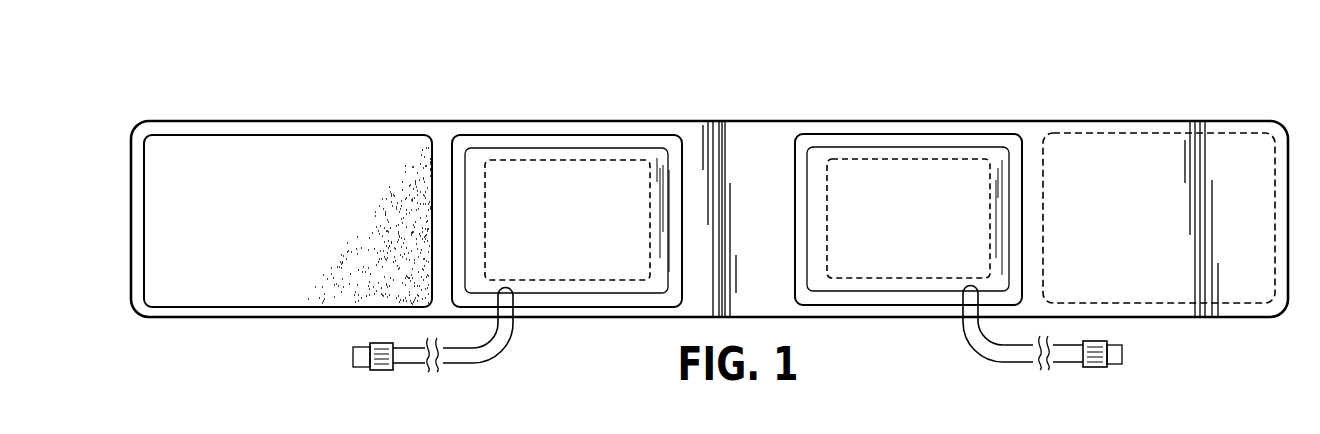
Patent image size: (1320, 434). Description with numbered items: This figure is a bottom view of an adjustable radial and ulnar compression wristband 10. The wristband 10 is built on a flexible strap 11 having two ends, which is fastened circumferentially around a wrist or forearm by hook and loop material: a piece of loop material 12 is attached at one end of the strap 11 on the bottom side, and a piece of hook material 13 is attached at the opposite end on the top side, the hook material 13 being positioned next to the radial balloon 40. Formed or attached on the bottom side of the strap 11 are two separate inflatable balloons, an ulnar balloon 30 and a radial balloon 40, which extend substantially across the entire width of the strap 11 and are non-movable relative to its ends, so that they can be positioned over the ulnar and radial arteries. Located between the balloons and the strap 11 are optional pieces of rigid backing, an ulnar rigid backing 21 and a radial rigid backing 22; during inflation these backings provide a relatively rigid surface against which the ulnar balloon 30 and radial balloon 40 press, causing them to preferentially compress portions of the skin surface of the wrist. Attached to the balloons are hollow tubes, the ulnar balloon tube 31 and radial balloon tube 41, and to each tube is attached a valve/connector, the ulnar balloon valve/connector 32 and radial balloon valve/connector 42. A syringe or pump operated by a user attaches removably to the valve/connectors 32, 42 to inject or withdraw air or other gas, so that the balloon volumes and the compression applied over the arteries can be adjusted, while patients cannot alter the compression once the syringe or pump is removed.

The wristband 10 is at (403, 68).
The flexible strap 11 is at (740, 121).
The loop material 12 is at (288, 135).
The hook material 13 is at (1160, 133).
The ulnar rigid backing 21 is at (621, 160).
The radial rigid backing 22 is at (955, 159).
The ulnar balloon 30 is at (568, 135).
The ulnar balloon tube 31 is at (464, 365).
The ulnar balloon valve/connector 32 is at (384, 372).
The radial balloon 40 is at (910, 134).
The radial balloon tube 41 is at (1005, 364).
The radial balloon valve/connector 42 is at (1092, 369).